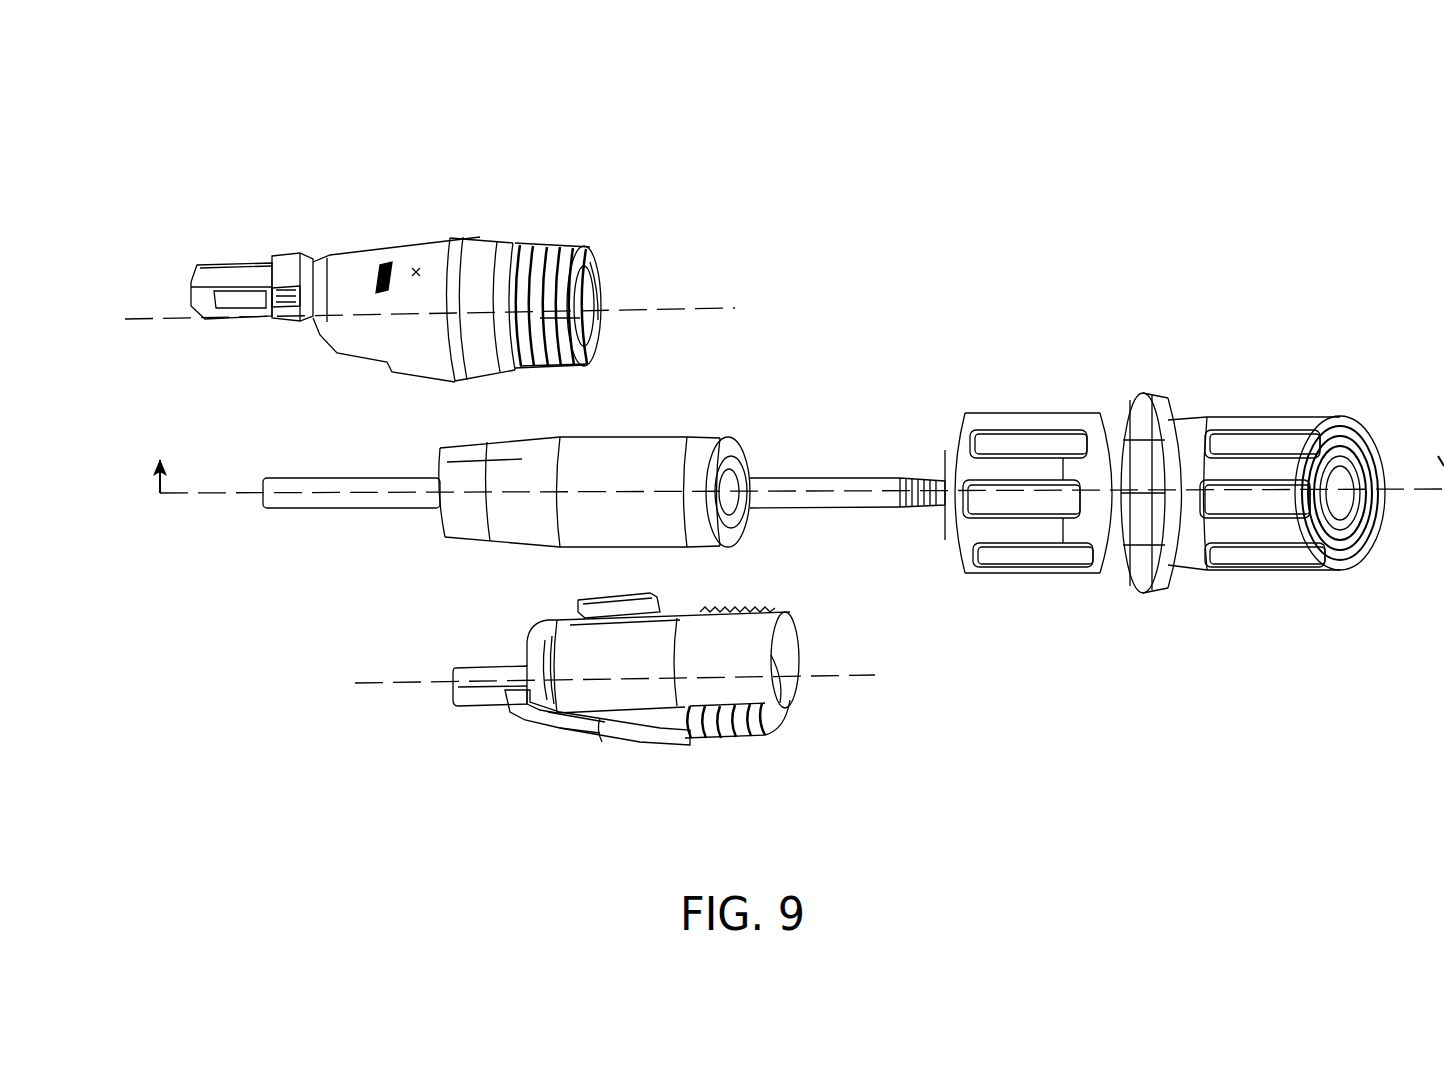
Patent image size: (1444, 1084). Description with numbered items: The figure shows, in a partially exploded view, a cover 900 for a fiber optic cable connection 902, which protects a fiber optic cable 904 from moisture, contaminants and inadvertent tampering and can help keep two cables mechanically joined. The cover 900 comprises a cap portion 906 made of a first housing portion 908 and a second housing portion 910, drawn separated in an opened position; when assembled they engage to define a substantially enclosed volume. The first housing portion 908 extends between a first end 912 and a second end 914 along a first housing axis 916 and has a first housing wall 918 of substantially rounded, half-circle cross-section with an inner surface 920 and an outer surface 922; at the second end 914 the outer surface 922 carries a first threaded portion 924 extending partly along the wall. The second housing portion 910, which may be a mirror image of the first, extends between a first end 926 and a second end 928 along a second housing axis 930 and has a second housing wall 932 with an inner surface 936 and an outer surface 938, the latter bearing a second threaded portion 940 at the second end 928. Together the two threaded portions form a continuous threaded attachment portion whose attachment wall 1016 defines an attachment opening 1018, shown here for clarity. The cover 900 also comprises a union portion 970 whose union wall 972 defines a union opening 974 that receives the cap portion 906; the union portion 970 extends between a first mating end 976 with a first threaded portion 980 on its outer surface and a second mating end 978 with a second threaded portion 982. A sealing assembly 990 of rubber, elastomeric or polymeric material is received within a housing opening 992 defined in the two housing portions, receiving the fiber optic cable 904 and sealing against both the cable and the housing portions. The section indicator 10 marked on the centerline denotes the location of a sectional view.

The cover 900 is at (460, 112).
The first end 912 is at (275, 230).
The first housing portion 908 is at (423, 250).
The outer surface 922 is at (475, 232).
The second end 914 is at (575, 215).
The first housing axis 916 is at (605, 250).
The inner surface 920 is at (602, 267).
The attachment opening 1018 is at (620, 295).
The first housing wall 918 is at (580, 318).
The first threaded portion 924 is at (572, 368).
The section line 10 is at (792, 459).
The fiber optic cable 904 is at (345, 480).
The sealing assembly 990 is at (720, 438).
The first threaded portion 980 is at (938, 528).
The fiber optic cable connection 902 is at (938, 403).
The first mating end 976 is at (993, 594).
The union portion 970 is at (1160, 398).
The union wall 972 is at (1273, 417).
The second mating end 978 is at (1313, 610).
The union opening 974 is at (1372, 560).
The second threaded portion 982 is at (1374, 452).
The cap portion 906 is at (400, 756).
The second housing axis 930 is at (378, 686).
The first end 926 is at (448, 632).
The housing opening 992 is at (590, 658).
The inner surface 936 is at (765, 644).
The attachment wall 1016 is at (790, 697).
The second housing wall 932 is at (650, 745).
The second housing portion 910 is at (597, 742).
The outer surface 938 is at (672, 746).
The second threaded portion 940 is at (748, 729).
The second end 928 is at (729, 800).